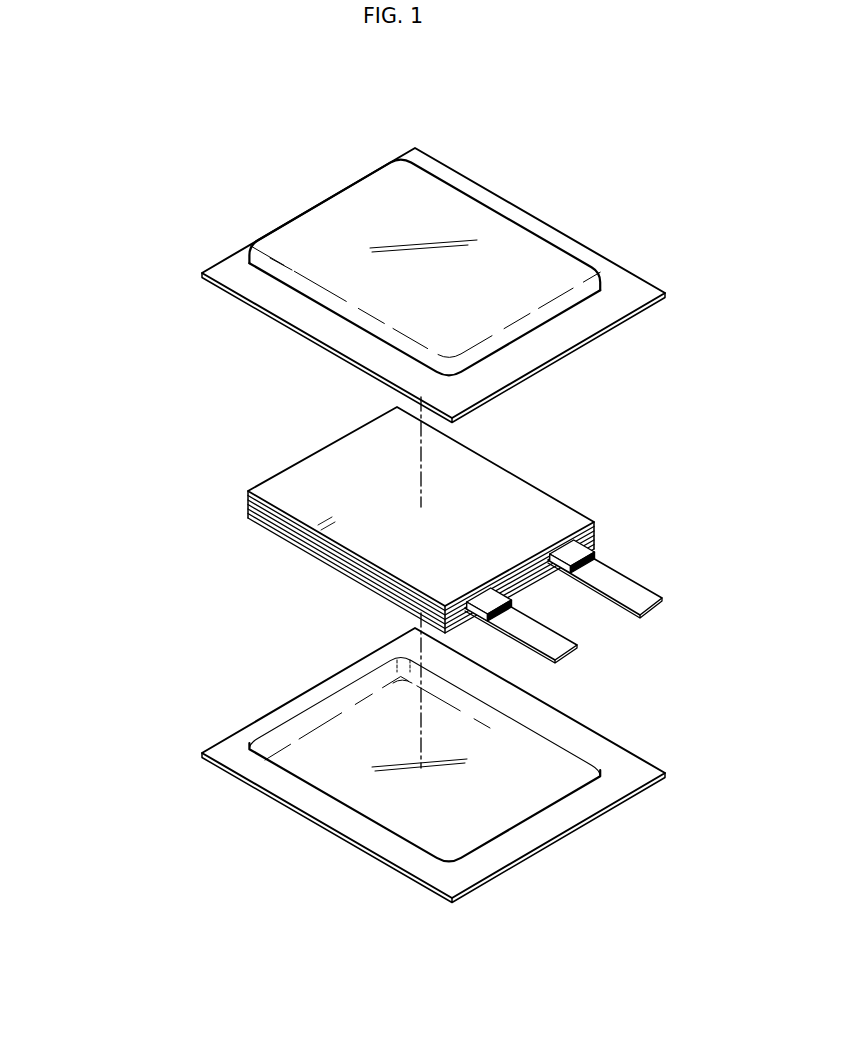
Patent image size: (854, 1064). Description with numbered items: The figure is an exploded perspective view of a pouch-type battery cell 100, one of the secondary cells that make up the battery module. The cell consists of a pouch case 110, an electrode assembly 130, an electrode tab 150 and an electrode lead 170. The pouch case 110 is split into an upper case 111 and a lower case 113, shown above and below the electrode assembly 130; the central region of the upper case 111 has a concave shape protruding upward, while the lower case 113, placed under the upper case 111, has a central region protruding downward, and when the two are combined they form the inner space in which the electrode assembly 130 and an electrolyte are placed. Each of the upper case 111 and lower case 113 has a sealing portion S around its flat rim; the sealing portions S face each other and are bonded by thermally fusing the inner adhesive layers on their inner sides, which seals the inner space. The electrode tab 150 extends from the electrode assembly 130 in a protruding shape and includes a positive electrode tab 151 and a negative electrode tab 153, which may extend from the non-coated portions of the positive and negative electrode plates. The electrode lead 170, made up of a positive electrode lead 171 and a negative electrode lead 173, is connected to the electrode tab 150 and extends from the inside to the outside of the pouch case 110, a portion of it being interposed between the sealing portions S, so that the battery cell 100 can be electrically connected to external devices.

The battery cell 100 is at (188, 141).
The pouch case 110 is at (95, 431).
The upper case 111 is at (218, 272).
The lower case 113 is at (218, 746).
The electrode assembly 130 is at (538, 495).
The electrode tab 150 is at (648, 472).
The positive electrode tab 151 is at (574, 549).
The negative electrode tab 153 is at (496, 584).
The electrode lead 170 is at (599, 619).
The positive electrode lead 171 is at (645, 600).
The negative electrode lead 173 is at (558, 647).
The sealing portion S is at (624, 275).